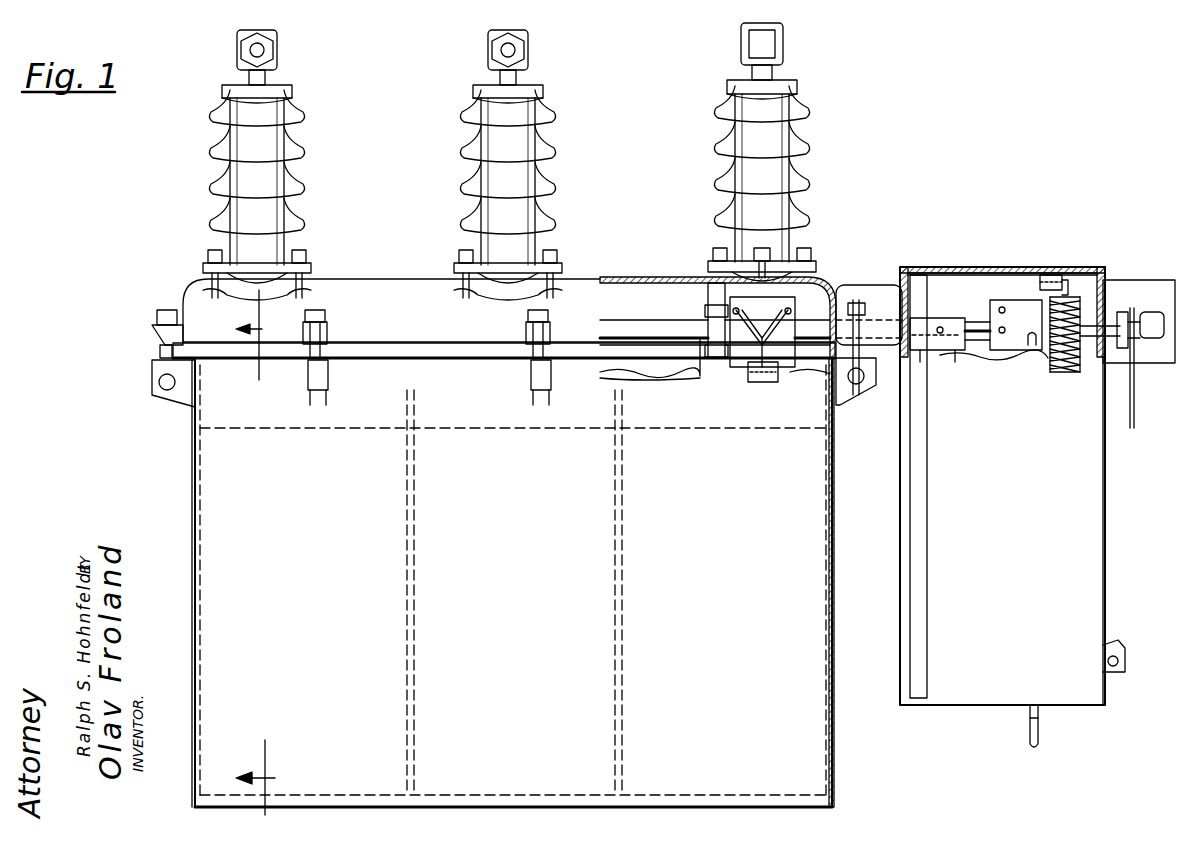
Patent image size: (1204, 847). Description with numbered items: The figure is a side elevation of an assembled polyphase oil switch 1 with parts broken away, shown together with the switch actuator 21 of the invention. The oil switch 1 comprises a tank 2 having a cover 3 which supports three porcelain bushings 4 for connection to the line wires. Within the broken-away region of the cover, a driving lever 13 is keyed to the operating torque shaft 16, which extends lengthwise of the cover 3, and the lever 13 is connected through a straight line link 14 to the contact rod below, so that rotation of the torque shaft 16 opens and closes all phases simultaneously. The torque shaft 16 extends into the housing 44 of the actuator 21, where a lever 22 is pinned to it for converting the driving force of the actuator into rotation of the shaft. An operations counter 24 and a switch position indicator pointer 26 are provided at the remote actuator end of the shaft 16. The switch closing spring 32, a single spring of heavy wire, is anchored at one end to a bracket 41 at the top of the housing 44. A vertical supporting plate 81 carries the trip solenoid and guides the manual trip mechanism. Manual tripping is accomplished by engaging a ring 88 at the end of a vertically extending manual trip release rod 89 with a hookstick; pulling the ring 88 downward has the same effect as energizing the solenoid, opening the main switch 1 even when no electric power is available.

The polyphase oil switch 1 is at (183, 286).
The tank 2 is at (216, 470).
The cover 3 is at (368, 300).
The porcelain bushings 4 is at (305, 152).
The driving lever 13 is at (793, 360).
The straight line link 14 is at (755, 383).
The operating torque shaft 16 is at (652, 330).
The switch actuator 21 is at (1105, 505).
The lever 22 is at (920, 350).
The operations counter 24 is at (1160, 316).
The switch position indicator pointer 26 is at (1136, 390).
The switch closing spring 32 is at (1082, 305).
The bracket 41 is at (1050, 275).
The housing 44 is at (963, 268).
The vertical supporting plate 81 is at (1016, 305).
The ring 88 is at (1040, 732).
The manual trip release rod 89 is at (1030, 348).